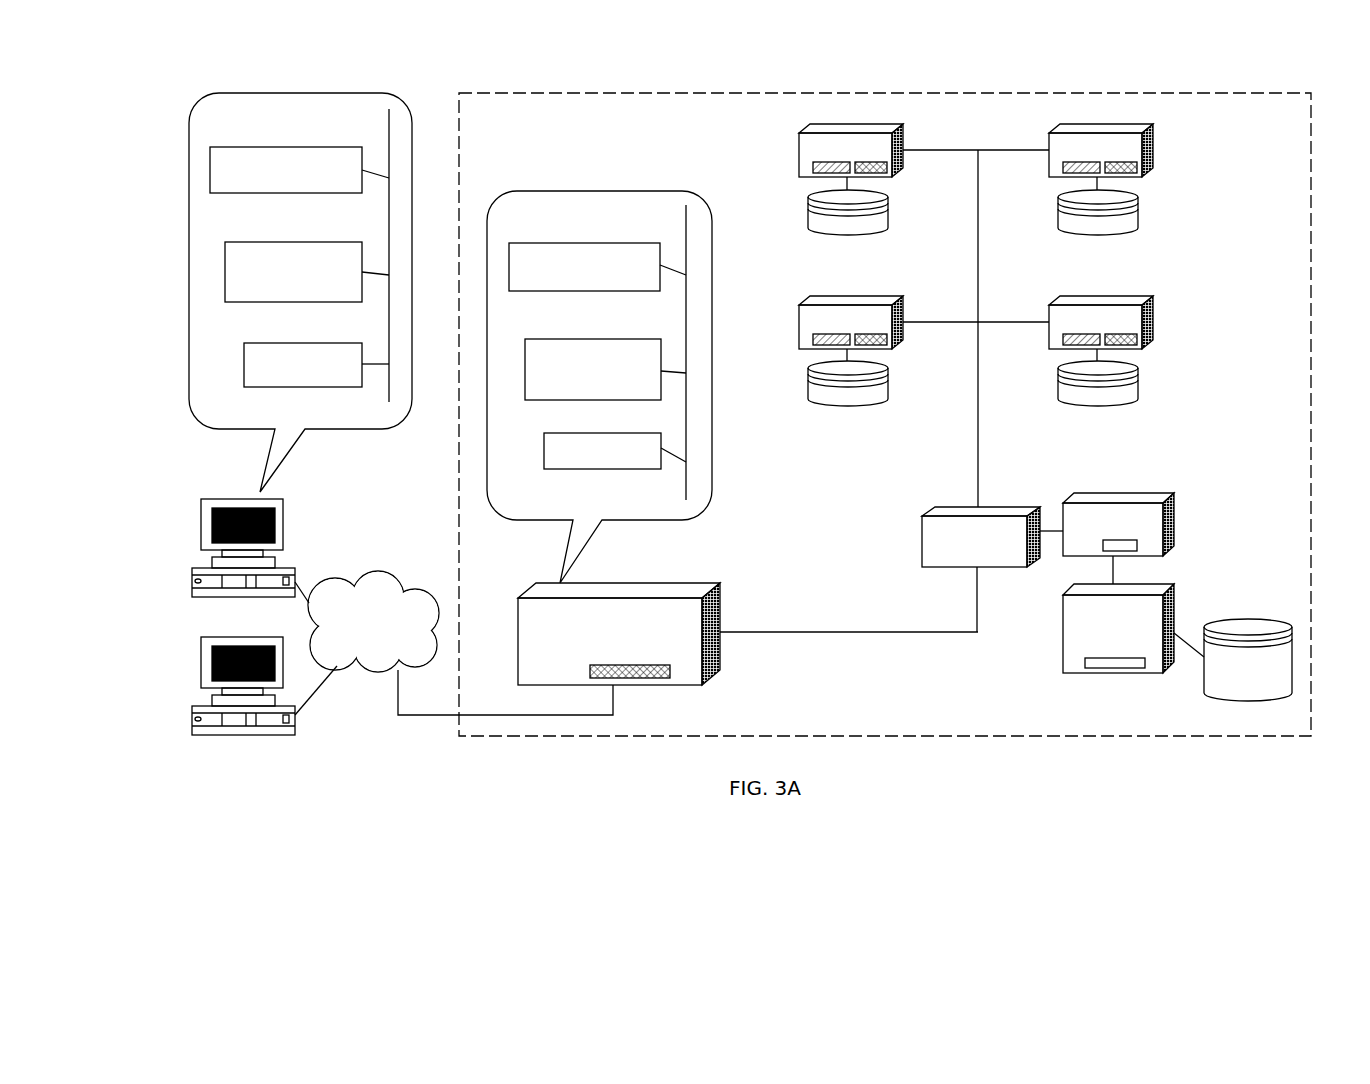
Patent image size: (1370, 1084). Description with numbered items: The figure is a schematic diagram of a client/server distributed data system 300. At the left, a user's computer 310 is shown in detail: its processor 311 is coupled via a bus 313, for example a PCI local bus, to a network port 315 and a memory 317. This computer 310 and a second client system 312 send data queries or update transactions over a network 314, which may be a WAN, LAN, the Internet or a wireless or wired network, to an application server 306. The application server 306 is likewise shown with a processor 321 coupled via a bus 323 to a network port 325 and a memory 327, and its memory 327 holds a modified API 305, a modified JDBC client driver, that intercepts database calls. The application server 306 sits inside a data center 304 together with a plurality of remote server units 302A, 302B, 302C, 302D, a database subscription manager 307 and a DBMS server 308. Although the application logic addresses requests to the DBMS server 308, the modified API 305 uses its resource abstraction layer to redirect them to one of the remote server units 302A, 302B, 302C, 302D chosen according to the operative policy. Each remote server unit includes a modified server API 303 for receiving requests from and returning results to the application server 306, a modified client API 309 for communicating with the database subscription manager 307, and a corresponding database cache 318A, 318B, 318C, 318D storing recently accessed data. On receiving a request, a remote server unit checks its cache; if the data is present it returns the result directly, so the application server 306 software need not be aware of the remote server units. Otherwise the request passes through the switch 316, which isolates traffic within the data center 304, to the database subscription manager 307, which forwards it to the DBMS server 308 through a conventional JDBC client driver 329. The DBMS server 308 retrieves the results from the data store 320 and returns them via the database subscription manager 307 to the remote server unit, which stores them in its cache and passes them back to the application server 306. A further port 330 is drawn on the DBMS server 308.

The system 300 is at (325, 46).
The remote server unit 302A is at (799, 142).
The remote server unit 302B is at (1153, 143).
The remote server unit 302C is at (799, 314).
The remote server unit 302D is at (1153, 315).
The modified server API 303 is at (799, 168).
The data center 304 is at (448, 138).
The modified API 305 is at (645, 680).
The application server 306 is at (725, 598).
The database subscription manager 307 is at (1178, 507).
The DBMS server 308 is at (1062, 648).
The modified client API 309 is at (893, 172).
The computer 310 is at (285, 519).
The processor 311 is at (254, 147).
The client system 312 is at (296, 733).
The bus 313 is at (389, 128).
The network 314 is at (400, 576).
The network port 315 is at (239, 242).
The switch 316 is at (921, 550).
The memory 317 is at (244, 358).
The database cache 318A is at (806, 223).
The database cache 318B is at (1140, 224).
The database cache 318C is at (806, 384).
The database cache 318D is at (1140, 386).
The data store 320 is at (1240, 618).
The processor 321 is at (553, 243).
The bus 323 is at (540, 339).
The network port 325 is at (544, 452).
The memory 327 is at (686, 231).
The conventional JDBC client driver 329 is at (1137, 550).
The DBMS server port 330 is at (1113, 672).